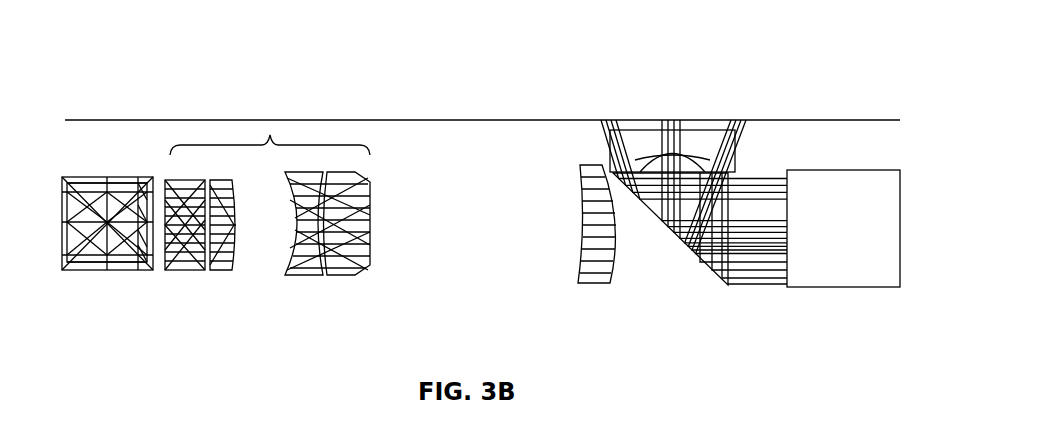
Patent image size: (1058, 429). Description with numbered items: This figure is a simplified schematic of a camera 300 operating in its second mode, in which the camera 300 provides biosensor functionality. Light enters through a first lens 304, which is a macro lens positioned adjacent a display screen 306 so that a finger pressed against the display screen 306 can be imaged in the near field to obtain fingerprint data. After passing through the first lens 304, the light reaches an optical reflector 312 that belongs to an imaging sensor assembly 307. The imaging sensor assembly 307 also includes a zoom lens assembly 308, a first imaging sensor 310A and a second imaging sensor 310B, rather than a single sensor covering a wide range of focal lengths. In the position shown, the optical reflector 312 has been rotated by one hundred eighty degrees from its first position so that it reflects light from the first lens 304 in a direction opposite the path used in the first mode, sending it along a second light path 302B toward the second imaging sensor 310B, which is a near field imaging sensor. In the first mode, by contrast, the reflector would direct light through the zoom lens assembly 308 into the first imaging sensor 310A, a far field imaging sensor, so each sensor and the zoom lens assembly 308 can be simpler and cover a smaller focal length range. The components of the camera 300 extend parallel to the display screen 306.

The camera 300 is at (722, 66).
The second light path 302B is at (757, 262).
The first lens 304 is at (737, 155).
The display screen 306 is at (470, 118).
The imaging sensor assembly 307 is at (406, 297).
The zoom lens assembly 308 is at (301, 286).
The first imaging sensor 310A is at (90, 270).
The second imaging sensor 310B is at (842, 287).
The optical reflector 312 is at (665, 222).